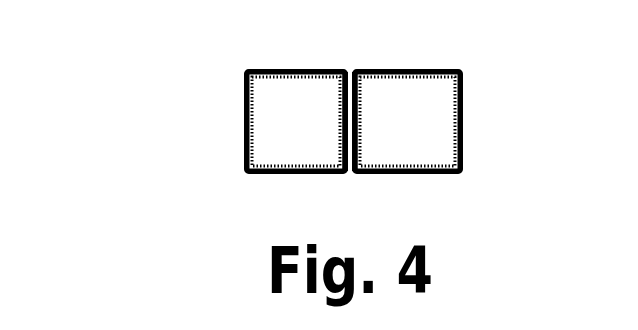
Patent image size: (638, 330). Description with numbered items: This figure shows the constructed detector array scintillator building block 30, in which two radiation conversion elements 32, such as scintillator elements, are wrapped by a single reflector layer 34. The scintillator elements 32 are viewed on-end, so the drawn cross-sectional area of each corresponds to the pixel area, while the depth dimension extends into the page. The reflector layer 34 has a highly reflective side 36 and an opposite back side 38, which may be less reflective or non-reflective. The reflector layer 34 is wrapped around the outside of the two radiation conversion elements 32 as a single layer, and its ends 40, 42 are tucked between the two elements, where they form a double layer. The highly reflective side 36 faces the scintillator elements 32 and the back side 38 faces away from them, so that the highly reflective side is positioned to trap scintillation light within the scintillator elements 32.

The detector array scintillator building block 30 is at (306, 134).
The radiation conversion element 32 is at (268, 139).
The reflector layer 34 is at (455, 87).
The highly reflective side 36 is at (270, 154).
The back side 38 is at (268, 186).
The end of the reflector layer 40 is at (318, 113).
The end of the reflector layer 42 is at (393, 123).